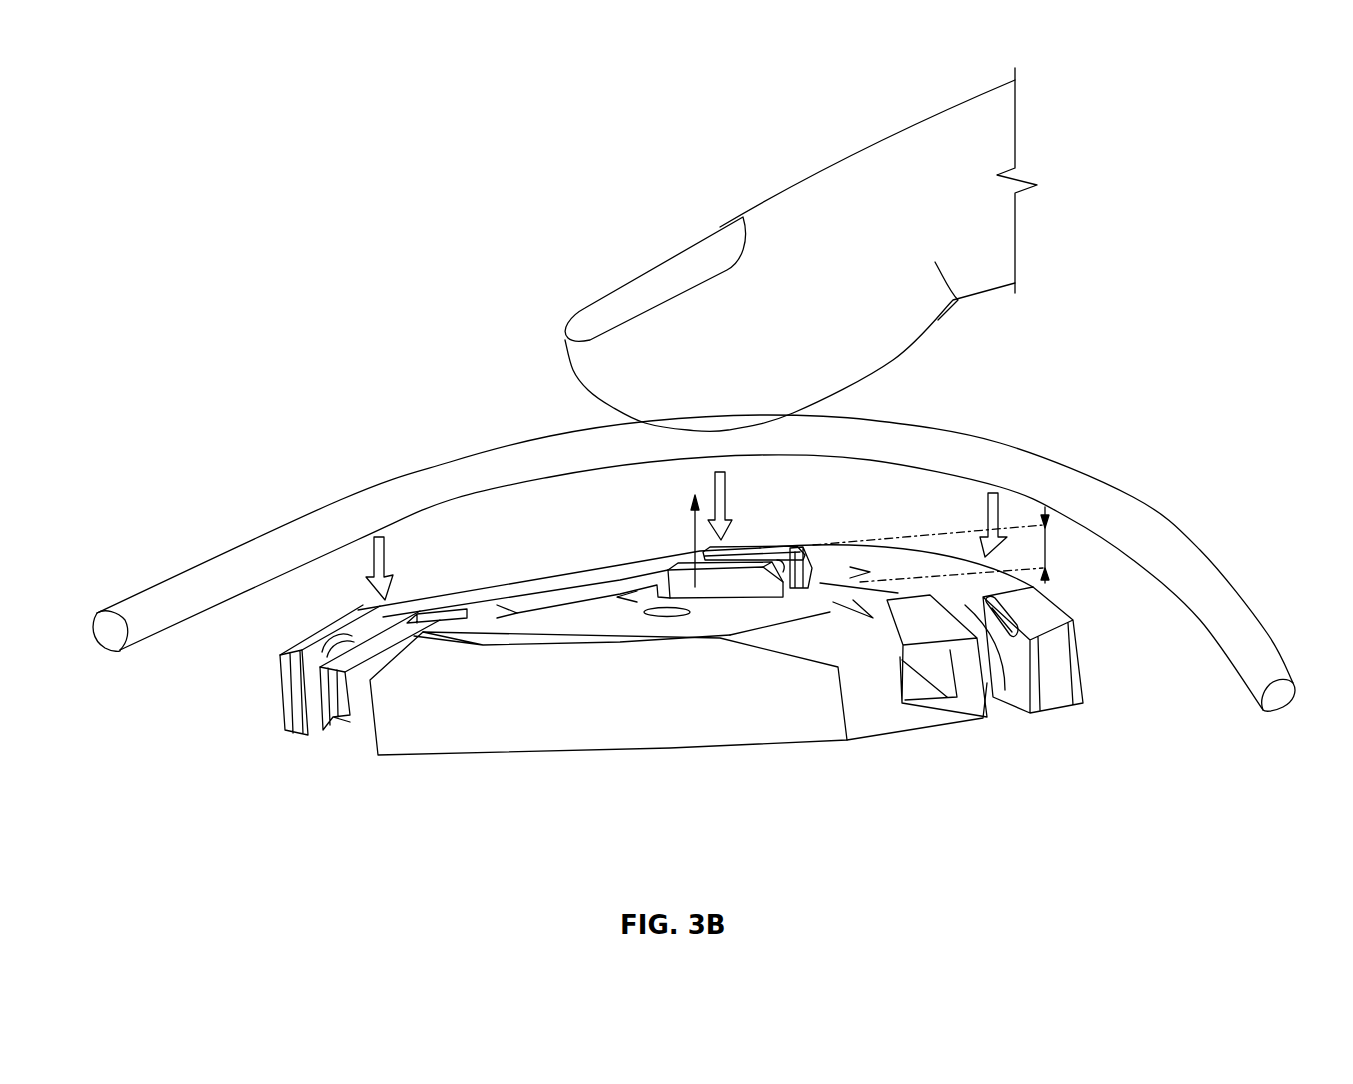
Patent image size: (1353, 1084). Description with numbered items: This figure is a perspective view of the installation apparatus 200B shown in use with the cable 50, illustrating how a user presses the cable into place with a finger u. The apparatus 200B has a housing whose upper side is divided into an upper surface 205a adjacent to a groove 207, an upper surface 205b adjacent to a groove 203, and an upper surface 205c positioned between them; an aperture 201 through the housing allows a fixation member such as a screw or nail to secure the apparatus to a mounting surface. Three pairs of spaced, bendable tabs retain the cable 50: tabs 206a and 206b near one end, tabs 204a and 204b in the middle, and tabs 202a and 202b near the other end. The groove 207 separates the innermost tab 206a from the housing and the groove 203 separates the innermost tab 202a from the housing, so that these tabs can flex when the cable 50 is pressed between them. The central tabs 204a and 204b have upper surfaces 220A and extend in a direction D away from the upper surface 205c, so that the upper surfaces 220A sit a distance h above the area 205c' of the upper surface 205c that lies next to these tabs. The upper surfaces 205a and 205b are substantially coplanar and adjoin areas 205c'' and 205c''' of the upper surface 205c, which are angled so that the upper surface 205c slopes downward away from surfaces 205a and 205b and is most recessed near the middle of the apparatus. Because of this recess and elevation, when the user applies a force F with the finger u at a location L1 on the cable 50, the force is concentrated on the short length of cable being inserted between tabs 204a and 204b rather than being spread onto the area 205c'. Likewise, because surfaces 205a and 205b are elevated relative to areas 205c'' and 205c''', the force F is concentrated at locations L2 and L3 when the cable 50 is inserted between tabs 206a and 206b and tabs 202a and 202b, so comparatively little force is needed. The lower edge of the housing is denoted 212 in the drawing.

The user's finger u is at (583, 365).
The cable 50 is at (437, 470).
The location L1 is at (795, 421).
The location L2 is at (980, 448).
The location L3 is at (383, 490).
The installation apparatus 200B is at (520, 495).
The aperture 201 is at (667, 617).
The tab 202a is at (960, 607).
The tab 202b is at (1013, 612).
The groove 203 is at (920, 693).
The tab 204a is at (723, 565).
The tab 204b is at (770, 557).
The upper surface 205a is at (420, 650).
The upper surface 205b is at (830, 645).
The upper surface 205c is at (516, 576).
The area of upper surface 205c' is at (570, 533).
The area of upper surface 205c'' is at (524, 665).
The area of upper surface 205c''' is at (753, 730).
The tab 206a is at (348, 635).
The tab 206b is at (350, 636).
The groove 207 is at (353, 718).
The base 212 is at (467, 760).
The upper surfaces 220A is at (737, 567).
The distance h is at (1050, 547).
The force F is at (365, 553).
The direction D is at (690, 523).